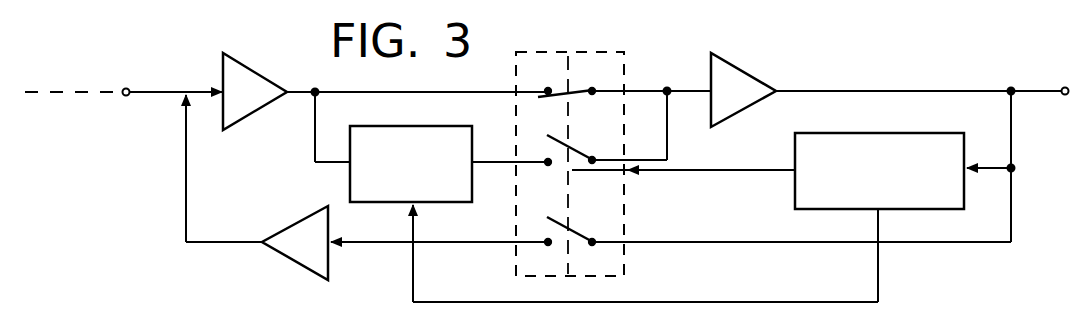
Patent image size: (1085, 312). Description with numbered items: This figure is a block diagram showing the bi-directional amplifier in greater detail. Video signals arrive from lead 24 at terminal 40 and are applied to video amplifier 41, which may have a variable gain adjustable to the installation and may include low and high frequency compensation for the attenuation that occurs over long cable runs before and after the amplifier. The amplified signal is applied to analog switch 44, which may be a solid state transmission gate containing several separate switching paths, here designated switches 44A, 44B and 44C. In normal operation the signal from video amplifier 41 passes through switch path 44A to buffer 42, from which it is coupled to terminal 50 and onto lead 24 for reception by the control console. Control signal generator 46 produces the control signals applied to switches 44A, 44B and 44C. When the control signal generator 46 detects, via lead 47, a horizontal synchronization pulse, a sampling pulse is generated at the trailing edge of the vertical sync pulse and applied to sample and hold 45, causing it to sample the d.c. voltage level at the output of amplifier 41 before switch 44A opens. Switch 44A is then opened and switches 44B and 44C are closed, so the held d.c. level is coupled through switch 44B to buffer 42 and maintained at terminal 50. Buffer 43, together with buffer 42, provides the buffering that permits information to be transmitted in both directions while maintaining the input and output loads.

The lead 24 is at (55, 95).
The terminal 40 is at (126, 88).
The video amplifier 41 is at (262, 72).
The buffer 42 is at (742, 70).
The buffer 43 is at (291, 259).
The analog switch 44 is at (565, 52).
The switch path 44A is at (560, 95).
The switch 44B is at (574, 155).
The switch 44C is at (574, 237).
The sample and hold 45 is at (415, 126).
The control signal generator 46 is at (877, 133).
The lead 47 is at (1011, 145).
The terminal 50 is at (1064, 86).